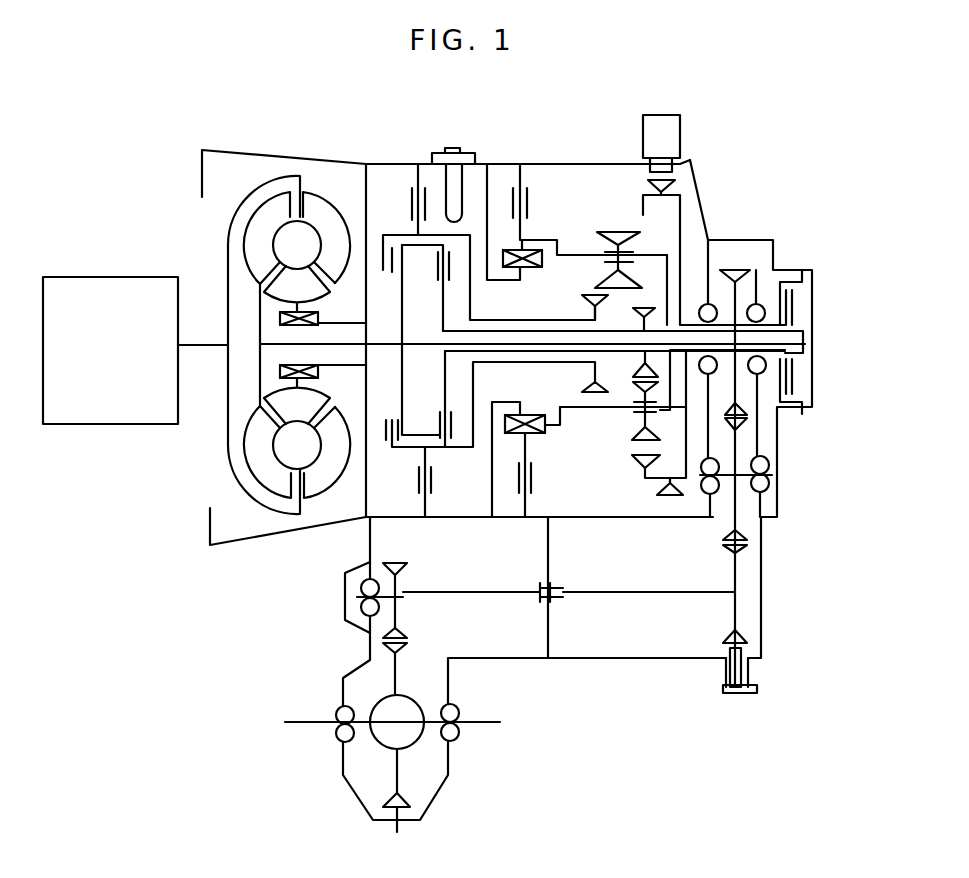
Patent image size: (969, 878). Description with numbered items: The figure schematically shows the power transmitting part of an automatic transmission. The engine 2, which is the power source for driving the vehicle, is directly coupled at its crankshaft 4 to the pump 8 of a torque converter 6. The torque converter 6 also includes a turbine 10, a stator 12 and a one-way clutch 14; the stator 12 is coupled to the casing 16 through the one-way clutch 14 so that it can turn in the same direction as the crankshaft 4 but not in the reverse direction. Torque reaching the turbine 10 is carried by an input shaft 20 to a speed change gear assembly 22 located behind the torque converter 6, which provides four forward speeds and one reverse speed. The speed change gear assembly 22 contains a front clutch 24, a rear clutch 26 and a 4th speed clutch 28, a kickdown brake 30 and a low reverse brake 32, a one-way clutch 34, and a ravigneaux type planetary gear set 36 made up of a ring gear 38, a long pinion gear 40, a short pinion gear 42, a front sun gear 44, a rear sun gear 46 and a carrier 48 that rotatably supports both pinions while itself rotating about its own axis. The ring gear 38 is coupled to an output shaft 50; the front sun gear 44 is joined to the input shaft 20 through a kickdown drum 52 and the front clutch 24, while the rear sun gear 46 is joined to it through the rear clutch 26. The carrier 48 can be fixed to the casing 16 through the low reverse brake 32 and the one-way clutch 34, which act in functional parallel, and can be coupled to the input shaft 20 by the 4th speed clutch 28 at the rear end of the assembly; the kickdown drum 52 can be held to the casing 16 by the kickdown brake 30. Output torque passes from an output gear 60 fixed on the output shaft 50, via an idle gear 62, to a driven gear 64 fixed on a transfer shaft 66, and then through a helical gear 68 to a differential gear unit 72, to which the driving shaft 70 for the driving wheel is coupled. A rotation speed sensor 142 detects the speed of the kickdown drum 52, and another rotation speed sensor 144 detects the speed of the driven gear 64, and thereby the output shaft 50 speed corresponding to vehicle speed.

The engine 2 is at (97, 362).
The crankshaft 4 is at (210, 349).
The torque converter 6 is at (259, 172).
The pump 8 is at (316, 200).
The turbine 10 is at (252, 227).
The stator 12 is at (287, 280).
The one-way clutch 14 is at (280, 320).
The casing 16 is at (505, 162).
The input shaft 20 is at (275, 350).
The speed change gear assembly 22 is at (569, 155).
The front clutch 24 is at (392, 448).
The rear clutch 26 is at (449, 447).
The 4th speed clutch 28 is at (797, 297).
The kickdown brake 30 is at (426, 493).
The low reverse brake 32 is at (524, 493).
The one-way clutch 34 is at (545, 433).
The ravigneaux type planetary gear set 36 is at (576, 232).
The ring gear 38 is at (636, 210).
The long pinion gear 40 is at (610, 223).
The short pinion gear 42 is at (637, 433).
The front sun gear 44 is at (582, 380).
The rear sun gear 46 is at (637, 363).
The carrier 48 is at (663, 253).
The output shaft 50 is at (747, 307).
The kickdown drum 52 is at (438, 230).
The output gear 60 is at (737, 267).
The idle gear 62 is at (745, 422).
The driven gear 64 is at (750, 548).
The transfer shaft 66 is at (638, 590).
The helical gear 68 is at (405, 615).
The driving shaft 70 is at (305, 735).
The differential gear unit 72 is at (382, 735).
The rotation speed sensor 142 is at (455, 148).
The rotation speed sensor 144 is at (738, 695).